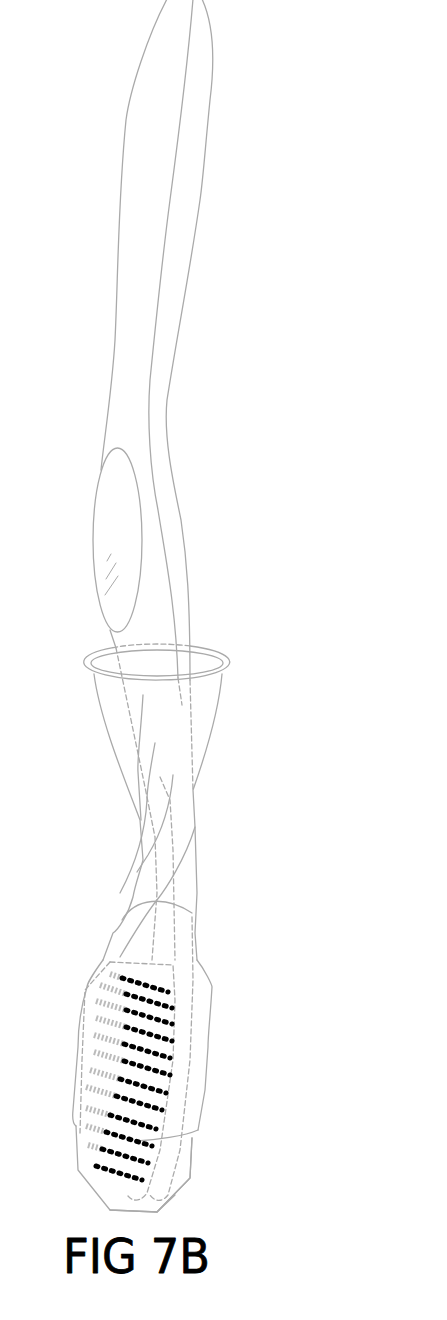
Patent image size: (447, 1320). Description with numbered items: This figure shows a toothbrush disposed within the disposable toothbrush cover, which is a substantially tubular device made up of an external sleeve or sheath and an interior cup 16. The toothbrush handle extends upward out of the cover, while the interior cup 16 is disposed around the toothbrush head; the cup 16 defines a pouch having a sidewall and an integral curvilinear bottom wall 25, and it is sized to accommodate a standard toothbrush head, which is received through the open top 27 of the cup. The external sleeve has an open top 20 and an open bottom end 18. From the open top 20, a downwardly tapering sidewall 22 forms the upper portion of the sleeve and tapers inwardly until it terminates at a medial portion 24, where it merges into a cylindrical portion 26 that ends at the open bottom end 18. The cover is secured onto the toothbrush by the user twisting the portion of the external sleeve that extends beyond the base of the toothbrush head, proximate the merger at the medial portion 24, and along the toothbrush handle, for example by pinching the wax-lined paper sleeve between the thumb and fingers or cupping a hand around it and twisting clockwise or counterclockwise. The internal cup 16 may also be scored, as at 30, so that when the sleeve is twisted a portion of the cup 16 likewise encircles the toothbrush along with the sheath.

The open top 27 is at (257, 141).
The open top 20 is at (218, 650).
The downwardly tapering sidewall 22 is at (118, 712).
The medial portion 24 is at (148, 977).
The scoring 30 is at (170, 991).
The cylindrical portion 26 is at (195, 1110).
The open bottom end 18 is at (196, 1138).
The interior cup 16 is at (88, 1180).
The curvilinear bottom wall 25 is at (165, 1210).